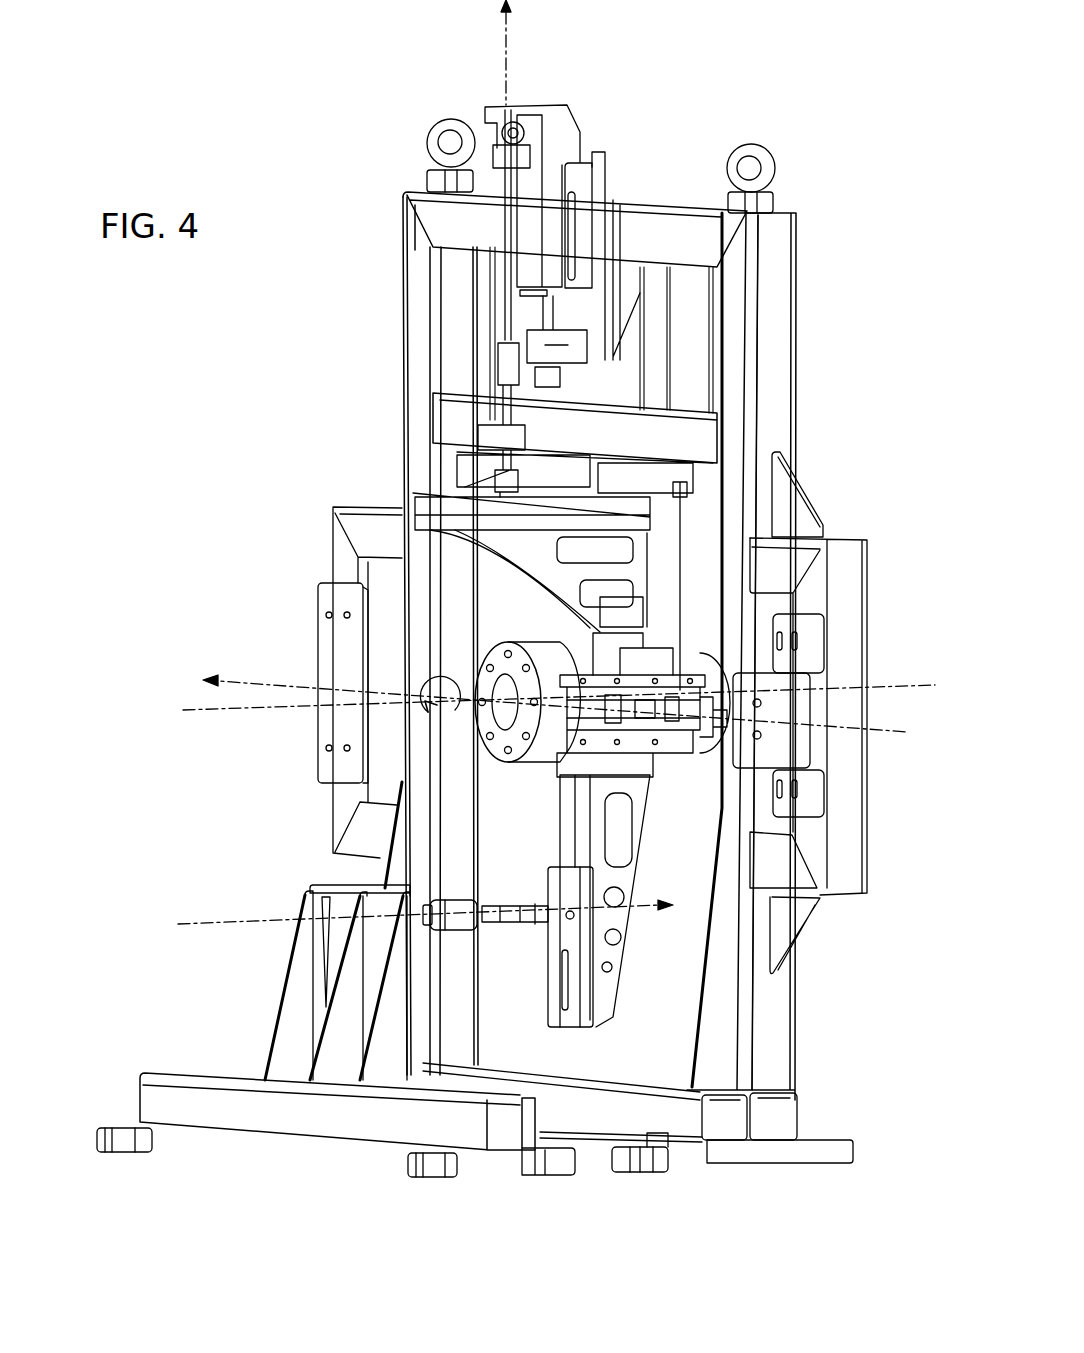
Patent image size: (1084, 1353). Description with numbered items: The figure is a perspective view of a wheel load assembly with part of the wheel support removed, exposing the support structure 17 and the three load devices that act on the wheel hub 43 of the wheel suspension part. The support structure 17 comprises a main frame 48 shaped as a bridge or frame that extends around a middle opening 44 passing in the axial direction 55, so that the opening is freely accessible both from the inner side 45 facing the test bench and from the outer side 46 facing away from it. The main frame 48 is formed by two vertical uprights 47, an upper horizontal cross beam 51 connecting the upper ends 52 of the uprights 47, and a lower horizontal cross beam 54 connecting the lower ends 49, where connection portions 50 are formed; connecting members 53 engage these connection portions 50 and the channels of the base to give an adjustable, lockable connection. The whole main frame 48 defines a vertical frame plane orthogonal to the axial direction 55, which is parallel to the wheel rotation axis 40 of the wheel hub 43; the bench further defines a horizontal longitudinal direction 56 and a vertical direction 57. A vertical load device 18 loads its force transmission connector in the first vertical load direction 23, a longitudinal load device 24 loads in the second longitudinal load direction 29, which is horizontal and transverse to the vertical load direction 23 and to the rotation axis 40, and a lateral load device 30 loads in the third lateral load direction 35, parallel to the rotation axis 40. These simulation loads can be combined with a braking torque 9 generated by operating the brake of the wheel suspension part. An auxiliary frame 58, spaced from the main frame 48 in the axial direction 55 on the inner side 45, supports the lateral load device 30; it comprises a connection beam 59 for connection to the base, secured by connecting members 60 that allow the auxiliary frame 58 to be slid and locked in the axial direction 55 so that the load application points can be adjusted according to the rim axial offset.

The braking torque 9 is at (575, 655).
The support structure 17 is at (856, 607).
The main frame 48 is at (762, 263).
The vertical load device 18 is at (510, 212).
The first vertical load direction 23 is at (596, 52).
The vertical direction 57 is at (508, 43).
The longitudinal load device 24 is at (733, 699).
The second longitudinal load direction 29 is at (230, 680).
The longitudinal direction 56 is at (522, 697).
The lateral load device 30 is at (463, 920).
The third lateral load direction 35 is at (203, 923).
The wheel rotation axis 40 is at (272, 708).
The axial direction 55 is at (211, 749).
The wheel hub 43 is at (573, 677).
The middle opening 44 is at (502, 593).
The inner side 45 is at (138, 712).
The outer side 46 is at (945, 667).
The uprights 47 is at (417, 357).
The lower ends 49 is at (760, 1068).
The connection portions 50 is at (765, 1157).
The upper cross beam 51 is at (653, 230).
The upper ends 52 is at (417, 210).
The connecting members 53 is at (670, 1150).
The lower cross beam 54 is at (578, 1105).
The auxiliary frame 58 is at (290, 1013).
The connection beam 59 is at (280, 1118).
The connecting members 60 is at (113, 1137).